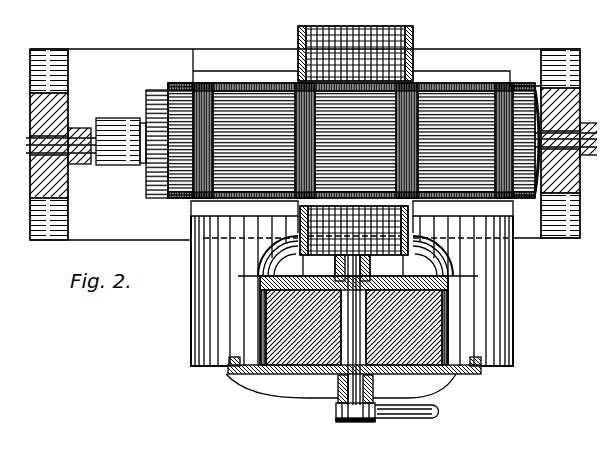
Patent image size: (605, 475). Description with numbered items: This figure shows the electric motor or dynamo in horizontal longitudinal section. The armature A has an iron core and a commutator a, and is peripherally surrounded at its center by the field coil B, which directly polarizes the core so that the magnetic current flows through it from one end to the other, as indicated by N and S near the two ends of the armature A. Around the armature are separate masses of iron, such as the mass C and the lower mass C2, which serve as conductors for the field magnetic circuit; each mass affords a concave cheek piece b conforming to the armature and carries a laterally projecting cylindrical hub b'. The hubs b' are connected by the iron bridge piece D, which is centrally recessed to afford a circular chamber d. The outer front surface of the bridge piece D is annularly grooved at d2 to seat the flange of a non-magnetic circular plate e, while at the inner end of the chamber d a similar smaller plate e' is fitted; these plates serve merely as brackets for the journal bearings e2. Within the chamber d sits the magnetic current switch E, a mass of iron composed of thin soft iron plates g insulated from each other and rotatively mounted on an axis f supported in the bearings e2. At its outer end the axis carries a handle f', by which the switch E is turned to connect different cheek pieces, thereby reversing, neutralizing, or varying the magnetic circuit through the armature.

The iron mass C is at (478, 66).
The concave cheek piece b is at (367, 67).
The field coil B is at (355, 45).
The armature A is at (342, 140).
The south pole end of armature core S is at (254, 141).
The north pole end of armature core N is at (456, 141).
The commutator a is at (121, 141).
The iron mass C2 is at (340, 216).
The cylindrical hub b' is at (352, 291).
The bridge piece D is at (358, 310).
The soft iron plates g is at (303, 327).
The magnetic current switch E is at (404, 327).
The axis f is at (355, 338).
The bearings e2 is at (353, 326).
The smaller plate e' is at (376, 268).
The non-magnetic circular plate e is at (354, 381).
The circular chamber d is at (440, 367).
The annular groove d2 is at (226, 349).
The handle f' is at (407, 425).